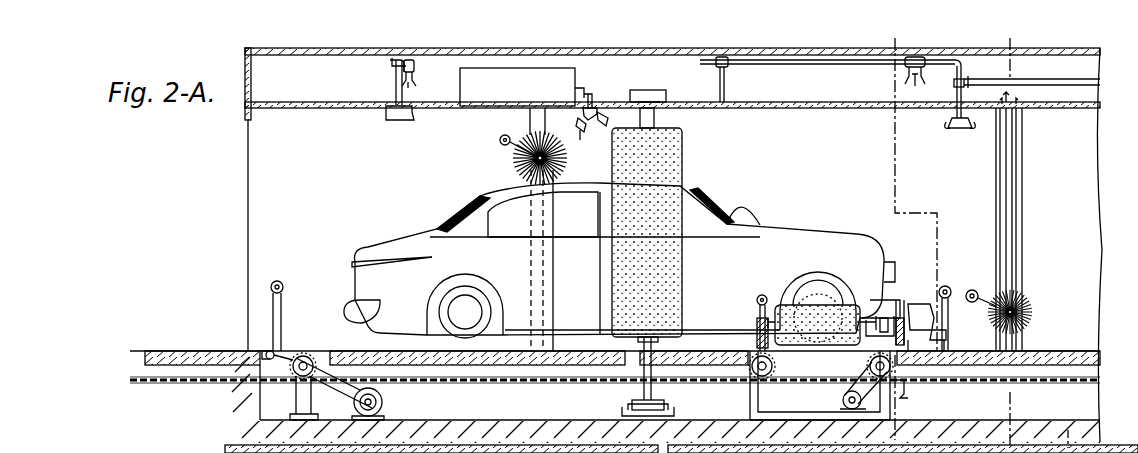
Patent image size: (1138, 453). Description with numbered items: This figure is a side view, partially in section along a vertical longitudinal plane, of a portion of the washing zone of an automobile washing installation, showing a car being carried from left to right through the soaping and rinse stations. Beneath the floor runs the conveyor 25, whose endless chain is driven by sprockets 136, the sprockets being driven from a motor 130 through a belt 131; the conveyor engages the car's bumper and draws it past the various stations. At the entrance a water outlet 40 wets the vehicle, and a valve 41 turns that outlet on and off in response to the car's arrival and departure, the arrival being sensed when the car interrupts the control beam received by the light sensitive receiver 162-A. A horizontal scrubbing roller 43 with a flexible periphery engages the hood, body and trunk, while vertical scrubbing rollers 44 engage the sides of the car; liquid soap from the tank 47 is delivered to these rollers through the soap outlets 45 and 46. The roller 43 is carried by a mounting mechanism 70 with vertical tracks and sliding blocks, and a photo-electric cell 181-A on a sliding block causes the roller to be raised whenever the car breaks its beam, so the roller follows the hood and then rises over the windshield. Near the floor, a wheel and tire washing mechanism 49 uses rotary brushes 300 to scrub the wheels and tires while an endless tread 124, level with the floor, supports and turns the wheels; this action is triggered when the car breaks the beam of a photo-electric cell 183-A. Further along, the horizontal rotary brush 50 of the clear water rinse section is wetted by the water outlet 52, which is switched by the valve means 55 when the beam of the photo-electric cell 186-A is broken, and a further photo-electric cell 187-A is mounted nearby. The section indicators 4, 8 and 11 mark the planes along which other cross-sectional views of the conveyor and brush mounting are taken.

The conveyor 25 is at (560, 385).
The water outlet 40 is at (390, 114).
The valve 41 is at (412, 74).
The scrubbing roller 43 is at (532, 160).
The vertical scrubbing rollers 44 is at (684, 128).
The liquid soap outlet 45 is at (594, 128).
The liquid soap outlet 46 is at (598, 110).
The tank 47 is at (527, 100).
The wheel and tire washing mechanism 49 is at (818, 302).
The horizontal rotary brush 50 is at (1024, 300).
The water outlet 52 is at (956, 128).
The valve means 55 is at (908, 73).
The brush mounting mechanism 70 is at (1018, 166).
The endless tread 124 is at (838, 388).
The motor 130 is at (384, 401).
The belt 131 is at (306, 392).
The sprockets 136 is at (290, 362).
The light sensitive receiver 162-A is at (279, 281).
The photo-electric cell 181-A is at (500, 139).
The limit switch 183-A is at (760, 294).
The limit switch 186-A is at (943, 286).
The limit switch 187-A is at (971, 290).
The rotary brushes 300 is at (838, 305).
The section line 4- 4 is at (895, 45).
The section line 8- 8 is at (1065, 440).
The section line 11- 11 is at (1010, 45).